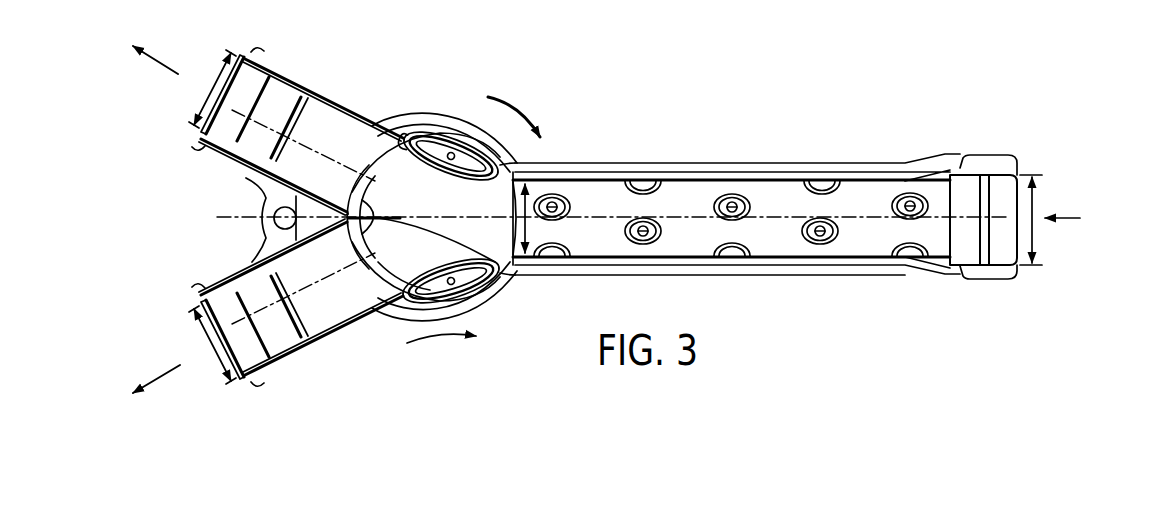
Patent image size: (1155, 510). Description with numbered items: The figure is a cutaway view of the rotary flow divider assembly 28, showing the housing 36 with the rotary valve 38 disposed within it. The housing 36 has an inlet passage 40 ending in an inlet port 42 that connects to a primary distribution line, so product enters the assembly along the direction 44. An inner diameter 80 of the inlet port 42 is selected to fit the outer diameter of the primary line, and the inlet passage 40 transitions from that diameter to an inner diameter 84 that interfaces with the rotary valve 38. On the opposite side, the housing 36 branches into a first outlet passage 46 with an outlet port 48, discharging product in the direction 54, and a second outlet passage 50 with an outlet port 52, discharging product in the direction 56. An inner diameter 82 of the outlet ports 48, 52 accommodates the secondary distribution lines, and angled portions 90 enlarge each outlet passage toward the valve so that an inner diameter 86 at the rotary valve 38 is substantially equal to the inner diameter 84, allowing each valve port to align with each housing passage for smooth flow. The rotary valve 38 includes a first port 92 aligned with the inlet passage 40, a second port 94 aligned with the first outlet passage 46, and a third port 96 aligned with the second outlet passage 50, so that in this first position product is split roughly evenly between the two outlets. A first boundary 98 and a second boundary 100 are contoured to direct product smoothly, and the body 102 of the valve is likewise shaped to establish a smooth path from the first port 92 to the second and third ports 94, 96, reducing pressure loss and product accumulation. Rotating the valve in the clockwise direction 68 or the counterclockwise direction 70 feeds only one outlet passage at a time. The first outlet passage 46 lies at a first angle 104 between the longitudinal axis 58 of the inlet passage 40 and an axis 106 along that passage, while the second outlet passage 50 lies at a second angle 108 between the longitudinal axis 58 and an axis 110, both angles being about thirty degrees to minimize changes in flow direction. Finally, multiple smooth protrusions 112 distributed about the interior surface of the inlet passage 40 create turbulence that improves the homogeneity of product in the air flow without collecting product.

The rotary flow divider assembly 28 is at (667, 100).
The housing 36 is at (490, 310).
The rotary valve 38 is at (418, 115).
The inlet passage 40 is at (714, 163).
The inlet port 42 is at (980, 175).
The direction 44 is at (1088, 218).
The first outlet passage 46 is at (324, 345).
The outlet port 48 is at (283, 363).
The second outlet passage 50 is at (333, 100).
The outlet port 52 is at (272, 87).
The direction 54 is at (180, 365).
The direction 56 is at (170, 77).
The longitudinal axis 58 is at (233, 214).
The clockwise direction 68 is at (518, 108).
The counterclockwise direction 70 is at (437, 345).
The inner diameter 80 is at (1033, 223).
The inner diameter 82 is at (195, 122).
The inner diameter 84 is at (530, 219).
The inner diameter 86 is at (354, 165).
The angled portions 90 is at (305, 108).
The first port 92 is at (496, 262).
The second port 94 is at (390, 285).
The third port 96 is at (382, 180).
The first boundary 98 is at (407, 170).
The second boundary 100 is at (487, 300).
The body 102 is at (468, 203).
The first angle 104 is at (388, 265).
The axis 106 is at (264, 275).
The second angle 108 is at (246, 178).
The axis 110 is at (243, 107).
The protrusions 112 is at (836, 228).